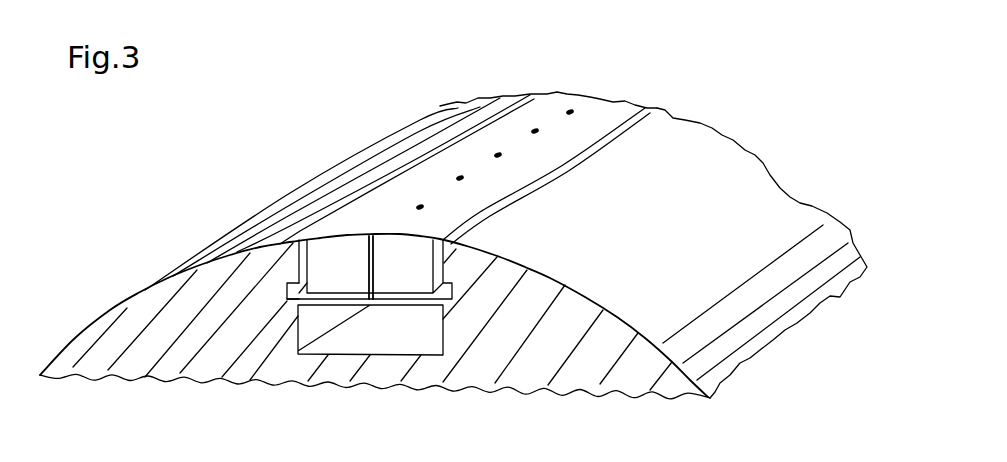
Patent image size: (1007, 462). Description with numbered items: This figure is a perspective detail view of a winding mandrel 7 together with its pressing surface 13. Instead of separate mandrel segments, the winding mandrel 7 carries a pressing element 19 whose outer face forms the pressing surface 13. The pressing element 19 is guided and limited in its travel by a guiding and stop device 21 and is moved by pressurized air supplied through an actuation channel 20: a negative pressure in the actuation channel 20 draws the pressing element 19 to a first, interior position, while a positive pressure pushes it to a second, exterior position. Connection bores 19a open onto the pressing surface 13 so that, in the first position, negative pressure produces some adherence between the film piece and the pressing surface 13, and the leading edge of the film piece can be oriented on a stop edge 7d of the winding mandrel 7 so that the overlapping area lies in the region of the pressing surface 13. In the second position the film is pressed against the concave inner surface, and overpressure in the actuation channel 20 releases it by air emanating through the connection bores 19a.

The winding mandrel 7 is at (217, 152).
The stop edge 7d is at (563, 165).
The pressing surface 13 is at (596, 123).
The connection bores 19a is at (460, 178).
The pressing element 19 is at (411, 312).
The actuation channel 20 is at (373, 328).
The guiding and stop device 21 is at (281, 299).